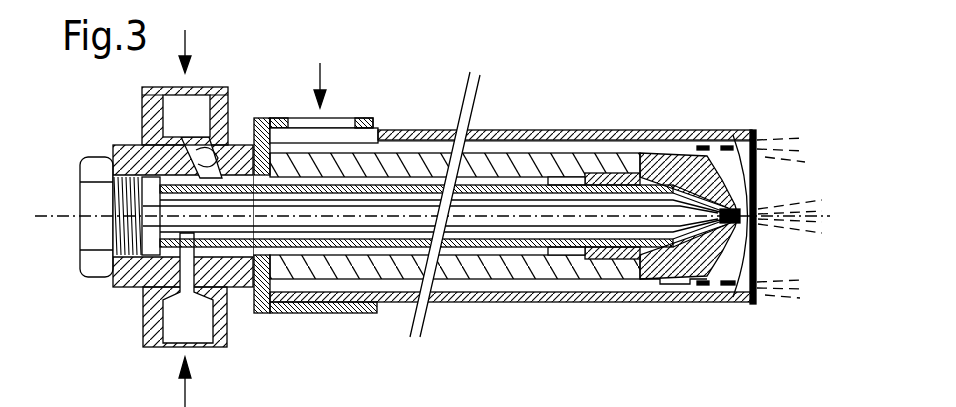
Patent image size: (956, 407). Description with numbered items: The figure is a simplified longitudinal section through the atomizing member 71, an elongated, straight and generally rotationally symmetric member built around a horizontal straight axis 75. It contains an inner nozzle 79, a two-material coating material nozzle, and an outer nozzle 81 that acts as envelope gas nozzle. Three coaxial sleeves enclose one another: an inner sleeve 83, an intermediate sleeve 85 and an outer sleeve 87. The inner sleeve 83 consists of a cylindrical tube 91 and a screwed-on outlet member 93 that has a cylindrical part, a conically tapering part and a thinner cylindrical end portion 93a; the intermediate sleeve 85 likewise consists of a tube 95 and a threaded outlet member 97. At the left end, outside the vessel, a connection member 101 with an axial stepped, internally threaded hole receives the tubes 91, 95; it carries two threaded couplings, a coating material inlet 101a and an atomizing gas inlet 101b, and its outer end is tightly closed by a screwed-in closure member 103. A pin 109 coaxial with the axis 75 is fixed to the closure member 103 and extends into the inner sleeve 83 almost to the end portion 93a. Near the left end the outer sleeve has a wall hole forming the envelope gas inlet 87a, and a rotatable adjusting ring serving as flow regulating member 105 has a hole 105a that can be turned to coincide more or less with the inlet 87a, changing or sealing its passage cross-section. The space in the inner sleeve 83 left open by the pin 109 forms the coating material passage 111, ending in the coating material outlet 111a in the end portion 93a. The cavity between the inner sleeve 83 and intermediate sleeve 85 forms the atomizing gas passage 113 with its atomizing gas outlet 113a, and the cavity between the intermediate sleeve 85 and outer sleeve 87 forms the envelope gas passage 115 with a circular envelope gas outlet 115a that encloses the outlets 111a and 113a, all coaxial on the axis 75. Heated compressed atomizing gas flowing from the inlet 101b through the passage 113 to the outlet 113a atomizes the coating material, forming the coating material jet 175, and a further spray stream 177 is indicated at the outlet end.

The atomizing member 71 is at (104, 143).
The axis 75 is at (62, 212).
The inner nozzle 79 is at (772, 158).
The outer nozzle 81 is at (700, 122).
The inner sleeve 83 is at (377, 140).
The intermediate sleeve 85 is at (407, 156).
The outer sleeve 87 is at (440, 150).
The envelope gas inlet 87a is at (347, 118).
The tube 91 is at (463, 252).
The outlet member 93 is at (658, 306).
The end portion 93a is at (733, 293).
The tube 95 is at (517, 270).
The outlet member 97 is at (700, 300).
The connection member 101 is at (134, 147).
The coating material inlet 101a is at (163, 349).
The atomizing gas inlet 101b is at (202, 86).
The closure member 103 is at (93, 268).
The flow regulating member 105 is at (338, 314).
The hole 105a is at (353, 118).
The pin 109 is at (393, 222).
The coating material passage 111 is at (465, 184).
The coating material outlet 111a is at (755, 244).
The atomizing gas passage 113 is at (532, 150).
The atomizing gas outlet 113a is at (725, 190).
The envelope gas passage 115 is at (548, 148).
The envelope gas outlet 115a is at (742, 200).
The coating material jet 175 is at (766, 204).
The lower spray stream 177 is at (767, 292).